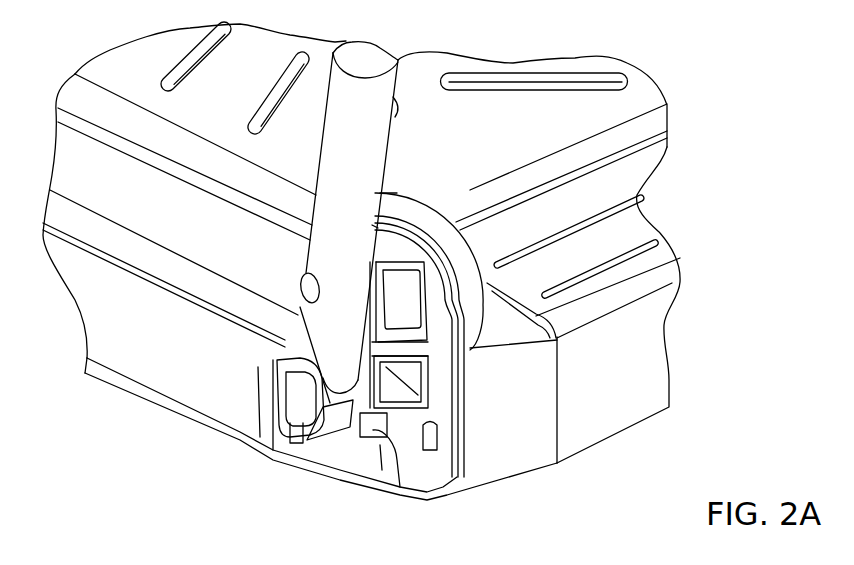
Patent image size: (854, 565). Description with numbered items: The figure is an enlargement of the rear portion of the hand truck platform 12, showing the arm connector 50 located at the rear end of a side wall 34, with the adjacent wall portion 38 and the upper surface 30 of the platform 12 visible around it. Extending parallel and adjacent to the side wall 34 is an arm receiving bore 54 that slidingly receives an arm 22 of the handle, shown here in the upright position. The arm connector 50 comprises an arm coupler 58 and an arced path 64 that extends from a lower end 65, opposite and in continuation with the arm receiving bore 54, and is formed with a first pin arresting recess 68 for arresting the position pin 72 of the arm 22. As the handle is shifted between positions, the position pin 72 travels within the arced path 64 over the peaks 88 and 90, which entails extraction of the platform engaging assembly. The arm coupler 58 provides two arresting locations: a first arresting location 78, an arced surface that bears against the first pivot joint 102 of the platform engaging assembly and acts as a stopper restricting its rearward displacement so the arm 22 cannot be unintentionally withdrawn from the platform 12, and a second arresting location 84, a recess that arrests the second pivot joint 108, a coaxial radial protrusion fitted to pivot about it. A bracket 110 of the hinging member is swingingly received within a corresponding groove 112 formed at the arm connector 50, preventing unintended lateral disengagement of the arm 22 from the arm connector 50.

The platform 12 is at (108, 50).
The arm 22 is at (370, 129).
The top surface 30 is at (220, 118).
The side wall 34 is at (108, 347).
The side wall 38 is at (637, 370).
The arm connector 50 is at (443, 453).
The arm receiving bore 54 is at (272, 455).
The arm coupler 58 is at (367, 437).
The arced path 64 is at (496, 385).
The lower end 65 is at (440, 420).
The first pin arresting recess 68 is at (482, 235).
The position pin 72 is at (378, 252).
The first arresting location 78 is at (438, 398).
The second arresting location 84 is at (323, 440).
The peak 88 is at (432, 252).
The peak 90 is at (408, 225).
The first pivot joint 102 is at (300, 307).
The second pivot joint 108 is at (275, 392).
The bracket 110 is at (375, 445).
The groove 112 is at (430, 423).